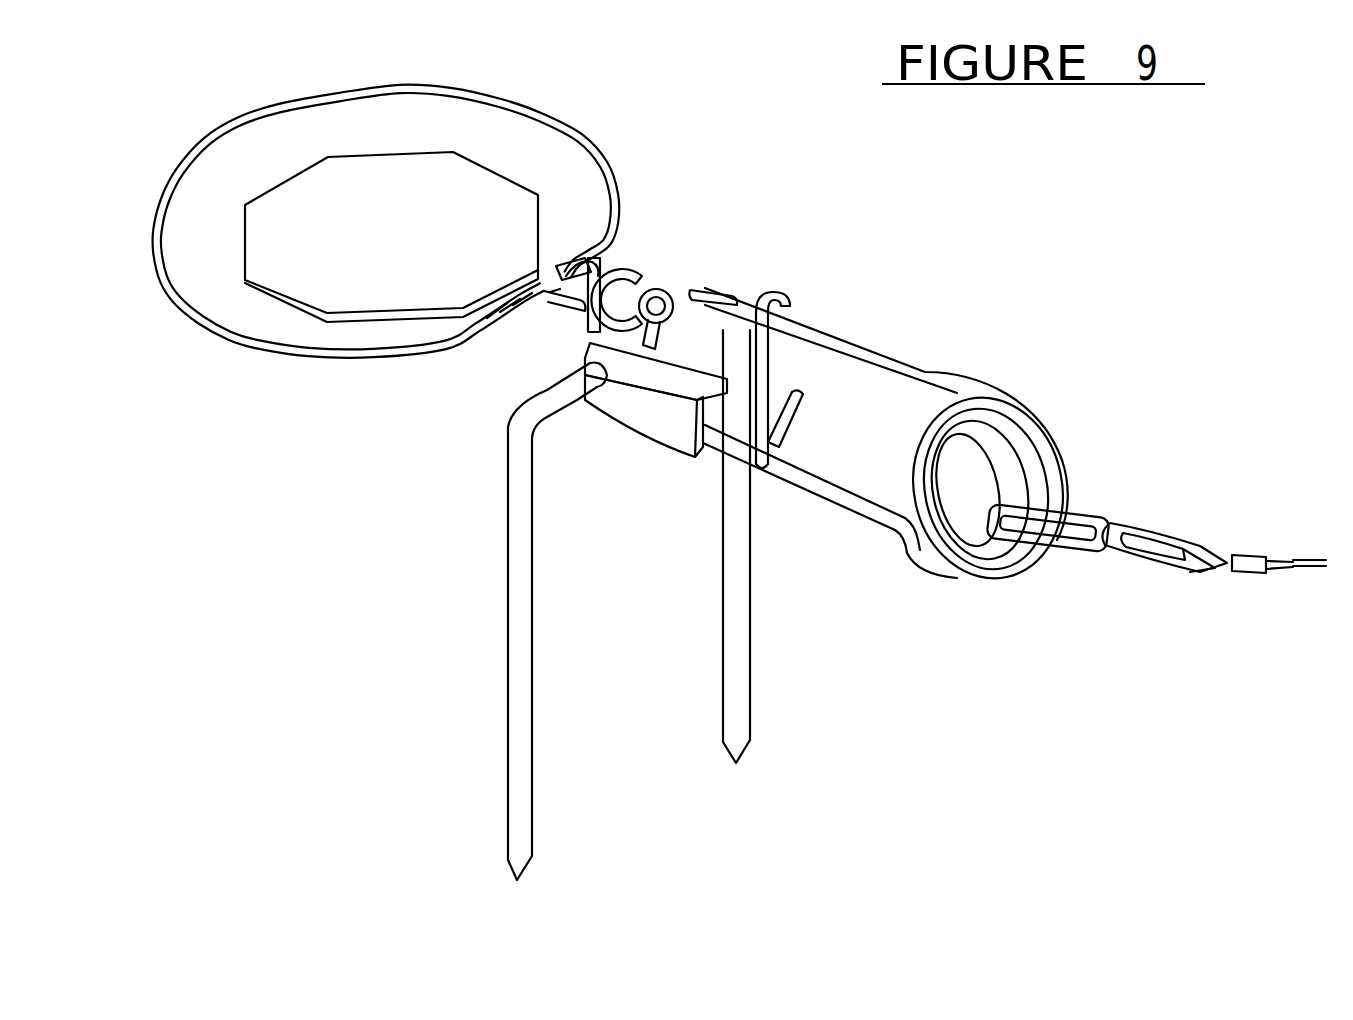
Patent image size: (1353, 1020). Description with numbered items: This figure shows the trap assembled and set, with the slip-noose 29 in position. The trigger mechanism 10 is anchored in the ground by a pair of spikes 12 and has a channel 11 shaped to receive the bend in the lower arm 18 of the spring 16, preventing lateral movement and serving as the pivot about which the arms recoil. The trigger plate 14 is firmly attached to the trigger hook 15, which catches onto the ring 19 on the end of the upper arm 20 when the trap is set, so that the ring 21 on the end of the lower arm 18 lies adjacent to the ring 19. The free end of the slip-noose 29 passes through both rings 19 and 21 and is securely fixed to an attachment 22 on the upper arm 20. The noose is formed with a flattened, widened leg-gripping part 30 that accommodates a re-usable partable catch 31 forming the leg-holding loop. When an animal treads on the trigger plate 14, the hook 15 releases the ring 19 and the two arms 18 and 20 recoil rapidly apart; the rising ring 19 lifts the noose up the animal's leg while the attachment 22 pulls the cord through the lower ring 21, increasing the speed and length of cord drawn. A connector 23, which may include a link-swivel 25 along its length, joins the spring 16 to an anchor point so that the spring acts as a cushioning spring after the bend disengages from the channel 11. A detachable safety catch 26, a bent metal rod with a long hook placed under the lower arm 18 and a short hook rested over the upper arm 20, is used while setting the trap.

The trigger mechanism 10 is at (652, 418).
The channel 11 is at (712, 399).
The spikes 12 is at (735, 675).
The trigger plate 14 is at (455, 205).
The trigger hook 15 is at (585, 340).
The spring 16 is at (1033, 452).
The lower arm 18 is at (850, 493).
The ring 19 is at (640, 260).
The upper arm 20 is at (848, 349).
The ring 21 is at (693, 293).
The attachment 22 is at (745, 292).
The connector 23 is at (1293, 566).
The link-swivel 25 is at (1108, 553).
The safety catch 26 is at (790, 362).
The slip-noose 29 is at (243, 347).
The leg-gripping part 30 is at (549, 300).
The partable catch 31 is at (580, 276).